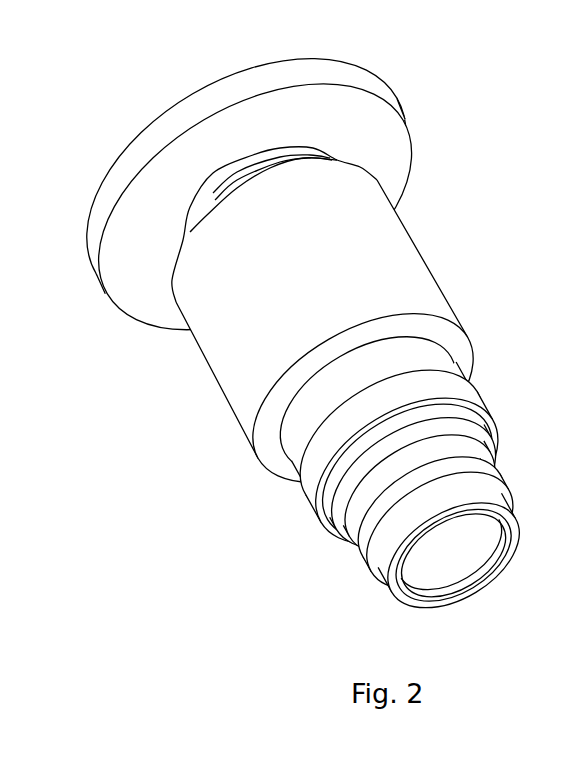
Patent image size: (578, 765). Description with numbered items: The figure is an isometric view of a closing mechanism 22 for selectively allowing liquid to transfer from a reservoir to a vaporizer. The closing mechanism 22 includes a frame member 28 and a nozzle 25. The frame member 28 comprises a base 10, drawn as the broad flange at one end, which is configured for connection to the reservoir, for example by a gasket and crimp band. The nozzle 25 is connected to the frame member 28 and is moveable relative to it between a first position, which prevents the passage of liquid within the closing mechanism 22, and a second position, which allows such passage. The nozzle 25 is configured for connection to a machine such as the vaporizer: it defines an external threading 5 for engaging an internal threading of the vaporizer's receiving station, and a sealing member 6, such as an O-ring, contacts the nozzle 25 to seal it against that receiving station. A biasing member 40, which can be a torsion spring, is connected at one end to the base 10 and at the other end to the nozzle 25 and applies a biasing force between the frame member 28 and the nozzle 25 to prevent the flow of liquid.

The base 10 is at (290, 318).
The closing mechanism 22 is at (321, 369).
The nozzle 25 is at (415, 236).
The frame member 28 is at (373, 70).
The biasing member 40 is at (223, 167).
The external threading 5 is at (490, 393).
The sealing member 6 is at (507, 480).